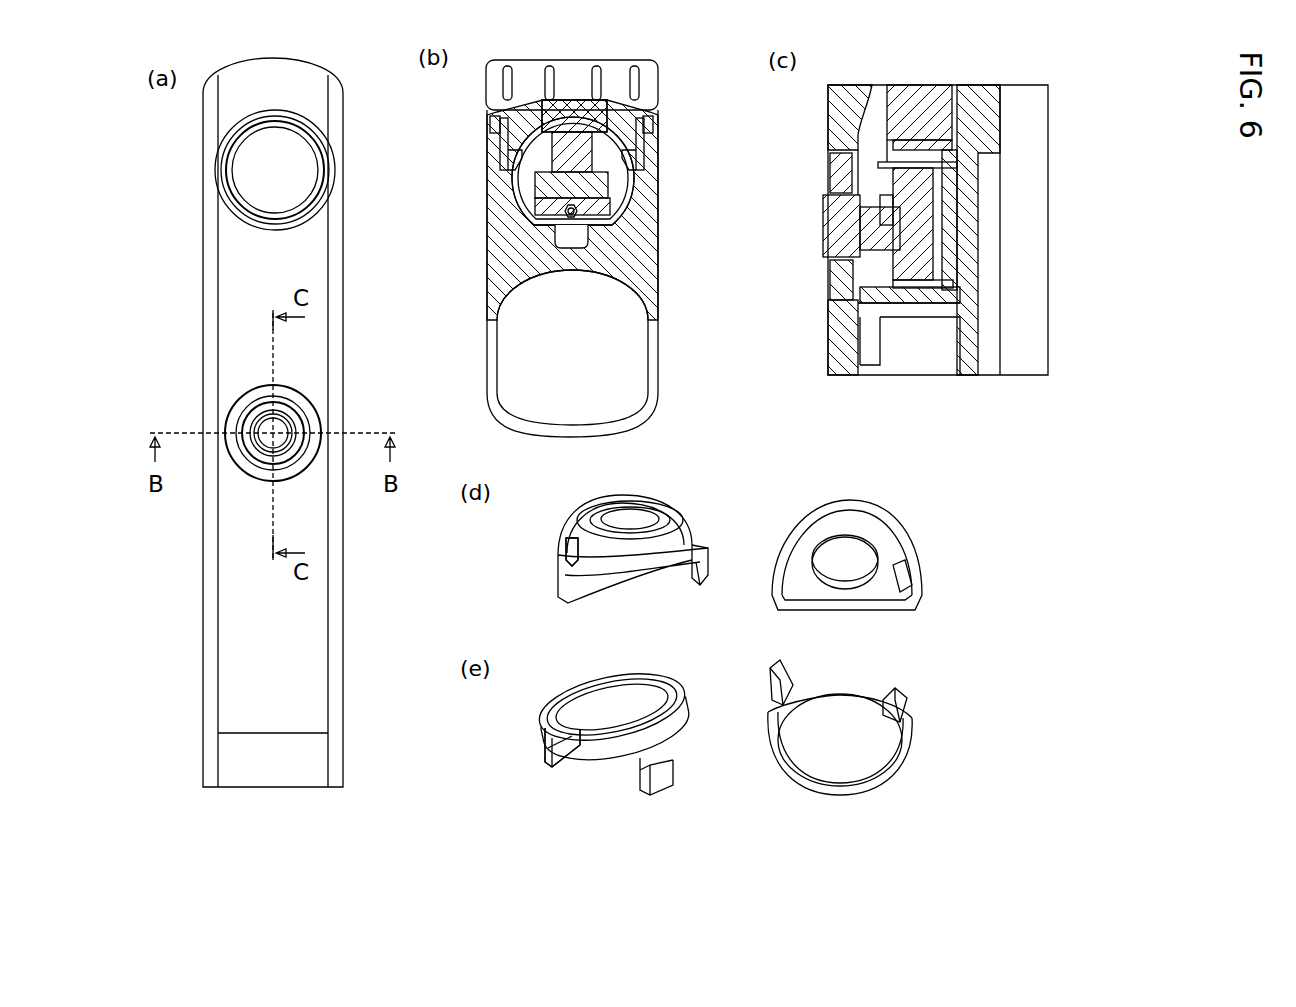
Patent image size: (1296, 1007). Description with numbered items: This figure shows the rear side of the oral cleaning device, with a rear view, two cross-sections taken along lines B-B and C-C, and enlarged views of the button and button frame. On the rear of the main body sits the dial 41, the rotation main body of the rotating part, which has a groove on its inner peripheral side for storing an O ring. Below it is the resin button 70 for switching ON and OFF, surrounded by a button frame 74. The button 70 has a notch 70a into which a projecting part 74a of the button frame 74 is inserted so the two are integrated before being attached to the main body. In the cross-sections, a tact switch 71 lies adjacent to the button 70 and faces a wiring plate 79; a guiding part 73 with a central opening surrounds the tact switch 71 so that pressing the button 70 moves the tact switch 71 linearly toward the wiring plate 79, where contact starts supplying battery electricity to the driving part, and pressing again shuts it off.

The dial 41 is at (333, 161).
The button 70 is at (300, 420).
The notch 70a is at (500, 123).
The tact switch 71 is at (632, 200).
The guiding part 73 is at (540, 190).
The button frame 74 is at (253, 480).
The projecting part 74a is at (510, 162).
The wiring plate 79 is at (610, 227).